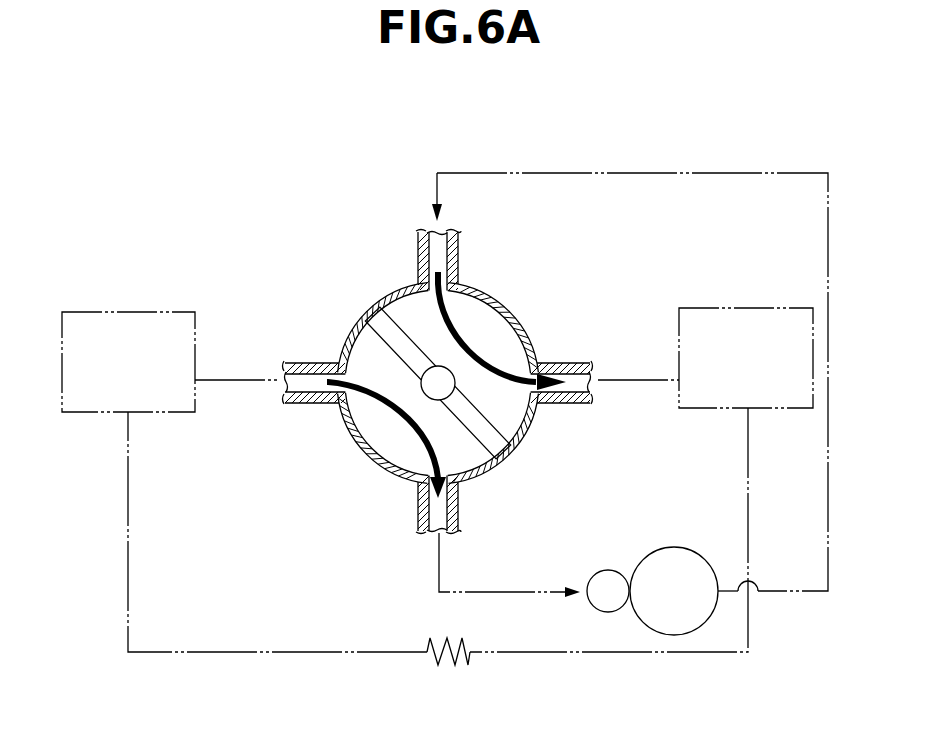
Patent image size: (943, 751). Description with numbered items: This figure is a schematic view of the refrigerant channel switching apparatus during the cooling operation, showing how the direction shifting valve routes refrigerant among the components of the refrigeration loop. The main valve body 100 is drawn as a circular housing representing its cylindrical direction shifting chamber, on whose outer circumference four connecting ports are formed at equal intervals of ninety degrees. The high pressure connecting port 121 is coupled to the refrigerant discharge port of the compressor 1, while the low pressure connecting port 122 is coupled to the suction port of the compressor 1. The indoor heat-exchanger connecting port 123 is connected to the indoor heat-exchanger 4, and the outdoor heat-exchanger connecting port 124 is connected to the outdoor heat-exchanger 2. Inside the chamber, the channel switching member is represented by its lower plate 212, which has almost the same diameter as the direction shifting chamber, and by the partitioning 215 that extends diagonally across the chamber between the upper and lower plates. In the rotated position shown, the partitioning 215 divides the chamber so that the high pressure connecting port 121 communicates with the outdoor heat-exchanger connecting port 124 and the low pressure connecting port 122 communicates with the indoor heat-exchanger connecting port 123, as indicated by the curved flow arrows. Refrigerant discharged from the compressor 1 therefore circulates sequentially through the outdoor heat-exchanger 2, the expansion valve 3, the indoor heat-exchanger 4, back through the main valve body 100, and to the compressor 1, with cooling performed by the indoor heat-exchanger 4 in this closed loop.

The compressor 1 is at (650, 624).
The outdoor heat-exchanger 2 is at (703, 308).
The expansion valve 3 is at (440, 668).
The indoor heat-exchanger 4 is at (124, 312).
The main valve body 100 is at (350, 438).
The high pressure connecting port 121 is at (435, 238).
The low pressure connecting port 122 is at (418, 517).
The indoor heat-exchanger connecting port 123 is at (302, 385).
The outdoor heat-exchanger connecting port 124 is at (572, 380).
The lower plate 212 is at (510, 410).
The partitioning 215 is at (477, 437).